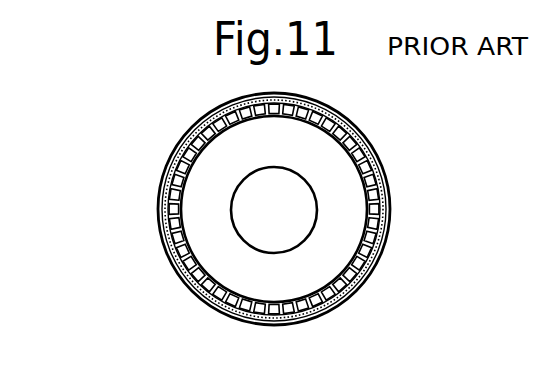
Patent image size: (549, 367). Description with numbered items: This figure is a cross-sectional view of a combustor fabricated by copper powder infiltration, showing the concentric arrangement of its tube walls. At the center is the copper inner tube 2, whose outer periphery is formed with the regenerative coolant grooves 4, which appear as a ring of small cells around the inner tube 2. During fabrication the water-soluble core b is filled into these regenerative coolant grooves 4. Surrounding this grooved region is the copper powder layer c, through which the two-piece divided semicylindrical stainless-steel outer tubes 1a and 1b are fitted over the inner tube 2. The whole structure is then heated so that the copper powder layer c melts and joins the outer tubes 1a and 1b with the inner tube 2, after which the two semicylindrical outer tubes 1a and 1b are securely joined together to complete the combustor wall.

The regenerative coolant grooves 4 is at (356, 133).
The semicylindrical stainless-steel outer tube 1a is at (380, 163).
The semicylindrical stainless-steel outer tube 1b is at (286, 327).
The water-soluble core b is at (370, 203).
The copper powder layer c is at (388, 212).
The inner tube 2 is at (340, 276).